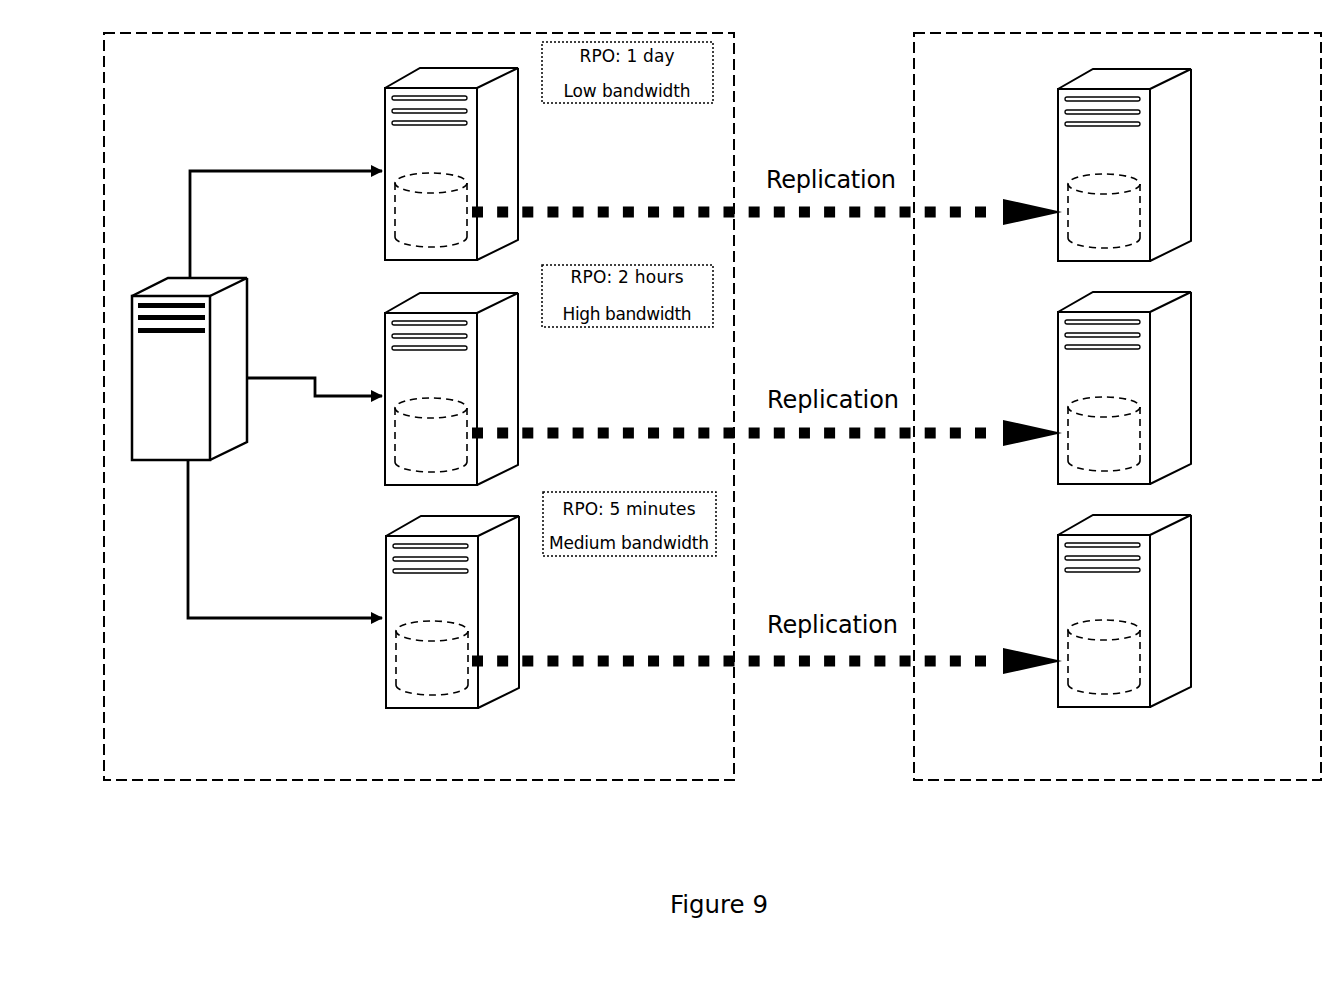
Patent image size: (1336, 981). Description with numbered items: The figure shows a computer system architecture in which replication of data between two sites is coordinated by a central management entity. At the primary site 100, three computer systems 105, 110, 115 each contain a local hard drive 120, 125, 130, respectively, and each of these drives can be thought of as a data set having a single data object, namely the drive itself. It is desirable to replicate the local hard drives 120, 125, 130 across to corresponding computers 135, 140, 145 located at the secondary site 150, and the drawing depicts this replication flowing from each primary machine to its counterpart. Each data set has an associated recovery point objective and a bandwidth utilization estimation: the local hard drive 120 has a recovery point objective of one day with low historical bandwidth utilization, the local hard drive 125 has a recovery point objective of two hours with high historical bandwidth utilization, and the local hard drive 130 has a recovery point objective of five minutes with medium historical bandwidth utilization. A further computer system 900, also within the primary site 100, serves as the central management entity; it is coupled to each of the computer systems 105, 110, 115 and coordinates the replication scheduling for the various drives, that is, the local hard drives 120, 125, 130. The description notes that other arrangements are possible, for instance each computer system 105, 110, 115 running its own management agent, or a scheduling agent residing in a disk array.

The primary site 100 is at (214, 764).
The computer system 105 is at (510, 167).
The computer system 110 is at (510, 393).
The computer system 115 is at (507, 620).
The local hard drive 120 is at (398, 208).
The local hard drive 125 is at (398, 432).
The local hard drive 130 is at (404, 661).
The computer 135 is at (1182, 168).
The computer 140 is at (1182, 395).
The computer 145 is at (1177, 618).
The secondary site 150 is at (1152, 765).
The computer system 900 is at (172, 452).